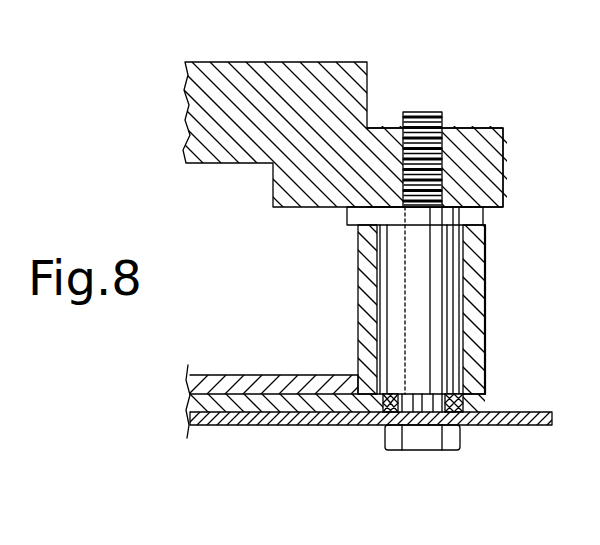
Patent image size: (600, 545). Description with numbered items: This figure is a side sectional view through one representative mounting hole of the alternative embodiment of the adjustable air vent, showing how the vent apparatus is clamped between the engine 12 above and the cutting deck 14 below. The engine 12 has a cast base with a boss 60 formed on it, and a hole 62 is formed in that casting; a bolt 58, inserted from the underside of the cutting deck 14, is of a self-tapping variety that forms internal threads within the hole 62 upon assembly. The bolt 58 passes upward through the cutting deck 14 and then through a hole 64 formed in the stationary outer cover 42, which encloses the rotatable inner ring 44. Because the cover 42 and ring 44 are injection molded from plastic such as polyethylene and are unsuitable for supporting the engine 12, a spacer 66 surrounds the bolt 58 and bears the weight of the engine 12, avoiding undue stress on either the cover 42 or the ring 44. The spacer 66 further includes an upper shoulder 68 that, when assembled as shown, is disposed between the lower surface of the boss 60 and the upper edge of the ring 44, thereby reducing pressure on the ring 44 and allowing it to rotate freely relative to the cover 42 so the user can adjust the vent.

The engine 12 is at (353, 66).
The boss 60 is at (503, 130).
The hole 62 is at (443, 127).
The upper shoulder 68 is at (347, 220).
The rotatable inner ring 44 is at (358, 270).
The stationary outer cover 42 is at (485, 240).
The spacer 66 is at (440, 302).
The hole 64 is at (463, 397).
The cutting deck 14 is at (530, 410).
The bolt 58 is at (427, 442).